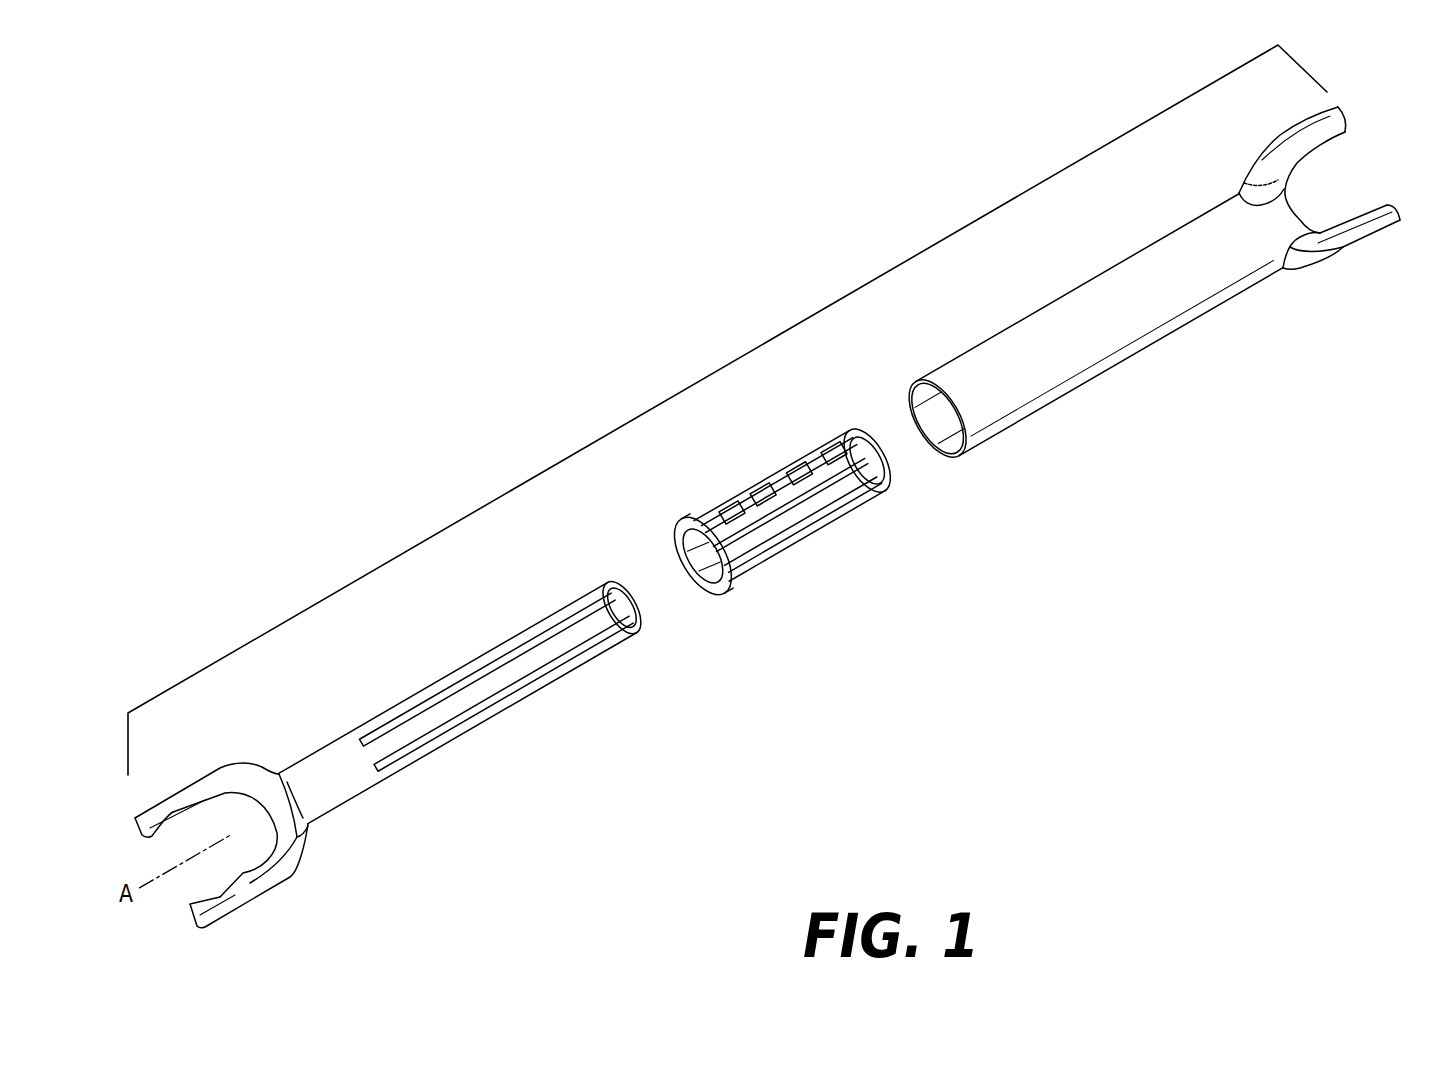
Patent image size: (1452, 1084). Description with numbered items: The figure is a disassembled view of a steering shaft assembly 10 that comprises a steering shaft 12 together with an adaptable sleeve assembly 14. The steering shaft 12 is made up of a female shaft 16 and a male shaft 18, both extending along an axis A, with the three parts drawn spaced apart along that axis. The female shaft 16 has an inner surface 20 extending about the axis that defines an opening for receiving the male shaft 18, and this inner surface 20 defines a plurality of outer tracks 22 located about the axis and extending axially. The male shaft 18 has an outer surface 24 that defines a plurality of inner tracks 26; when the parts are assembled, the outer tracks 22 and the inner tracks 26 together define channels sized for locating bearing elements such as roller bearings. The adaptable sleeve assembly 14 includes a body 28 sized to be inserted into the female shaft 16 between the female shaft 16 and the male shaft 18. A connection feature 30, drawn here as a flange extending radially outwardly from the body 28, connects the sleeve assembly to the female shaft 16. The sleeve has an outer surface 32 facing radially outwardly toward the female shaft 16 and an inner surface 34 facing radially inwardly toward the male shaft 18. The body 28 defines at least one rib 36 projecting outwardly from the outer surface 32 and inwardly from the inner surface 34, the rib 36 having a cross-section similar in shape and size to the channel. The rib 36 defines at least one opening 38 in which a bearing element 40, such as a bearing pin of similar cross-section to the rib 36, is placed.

The steering shaft assembly 10 is at (1380, 155).
The steering shaft 12 is at (637, 418).
The adaptable sleeve assembly 14 is at (763, 521).
The female shaft 16 is at (1148, 316).
The male shaft 18 is at (392, 752).
The inner surface 20 is at (937, 418).
The outer tracks 22 is at (937, 419).
The outer surface 24 is at (488, 669).
The inner tracks 26 is at (503, 693).
The body 28 is at (797, 502).
The connection feature 30 is at (703, 556).
The outer surface 32 is at (785, 508).
The inner surface 34 is at (703, 556).
The rib 36 is at (766, 493).
The opening 38 is at (798, 474).
The bearing element 40 is at (791, 505).